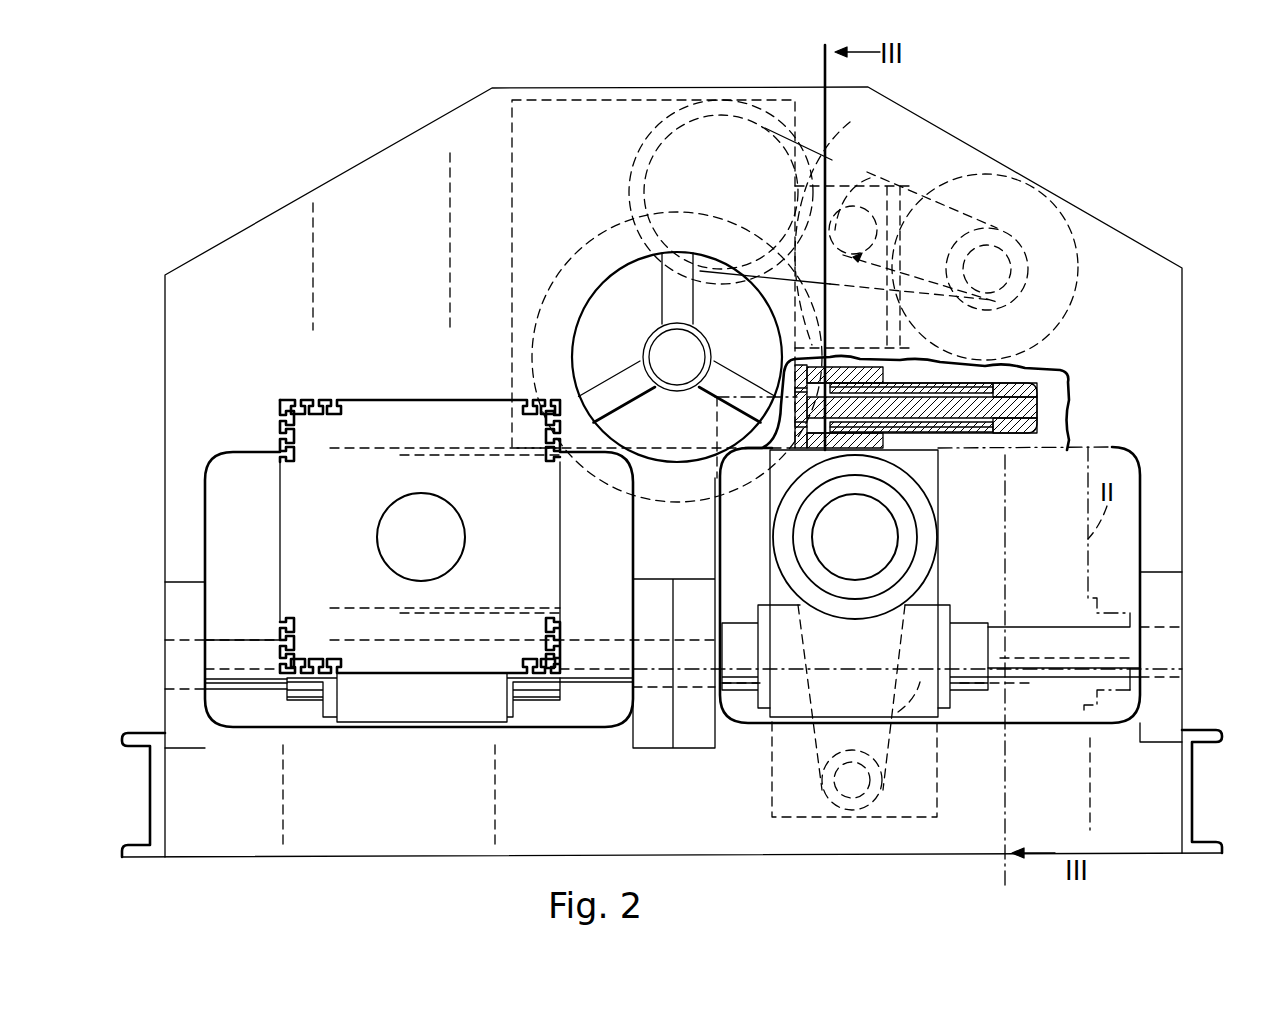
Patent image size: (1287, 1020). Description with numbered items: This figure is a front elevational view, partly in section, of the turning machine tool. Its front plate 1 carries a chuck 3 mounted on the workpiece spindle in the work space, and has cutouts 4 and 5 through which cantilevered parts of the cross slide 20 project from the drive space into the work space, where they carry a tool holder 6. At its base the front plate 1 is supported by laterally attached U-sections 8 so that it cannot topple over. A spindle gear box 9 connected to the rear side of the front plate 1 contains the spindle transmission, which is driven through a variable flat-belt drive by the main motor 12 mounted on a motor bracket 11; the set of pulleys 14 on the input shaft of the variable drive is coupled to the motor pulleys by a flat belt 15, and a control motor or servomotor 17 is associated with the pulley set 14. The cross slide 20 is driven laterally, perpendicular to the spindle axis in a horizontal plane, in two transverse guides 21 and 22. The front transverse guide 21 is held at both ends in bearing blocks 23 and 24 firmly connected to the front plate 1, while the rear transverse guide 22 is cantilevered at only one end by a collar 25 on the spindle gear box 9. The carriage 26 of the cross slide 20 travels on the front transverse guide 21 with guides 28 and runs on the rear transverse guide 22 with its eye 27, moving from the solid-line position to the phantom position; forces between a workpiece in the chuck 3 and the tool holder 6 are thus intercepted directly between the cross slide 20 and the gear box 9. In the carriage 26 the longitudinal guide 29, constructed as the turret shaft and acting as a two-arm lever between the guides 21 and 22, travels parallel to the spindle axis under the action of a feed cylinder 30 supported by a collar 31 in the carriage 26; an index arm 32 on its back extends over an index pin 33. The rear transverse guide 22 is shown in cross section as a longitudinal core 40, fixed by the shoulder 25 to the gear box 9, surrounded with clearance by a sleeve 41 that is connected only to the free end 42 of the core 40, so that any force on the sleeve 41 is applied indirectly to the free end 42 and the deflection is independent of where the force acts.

The front plate 1 is at (1166, 286).
The chuck 3 is at (623, 291).
The cutout 4 is at (240, 464).
The cutout 5 is at (1140, 536).
The tool holder 6 is at (413, 422).
The U-section 8 is at (158, 793).
The spindle gear box 9 is at (597, 99).
The motor bracket 11 is at (862, 168).
The main motor 12 is at (1000, 176).
The set of pulleys 14 is at (770, 102).
The flat belt 15 is at (836, 218).
The control motor 17 is at (878, 181).
The cross slide 20 is at (768, 526).
The transverse guide 21 is at (1065, 650).
The transverse guide 22 is at (930, 404).
The bearing block 23 is at (1165, 597).
The bearing block 24 is at (718, 740).
The collar 25 is at (800, 385).
The carriage 26 is at (888, 583).
The eye 27 is at (868, 368).
The guide 28 is at (742, 690).
The longitudinal guide 29 is at (825, 540).
The feed cylinder 30 is at (900, 557).
The collar 31 is at (925, 518).
The index arm 32 is at (867, 697).
The index pin 33 is at (883, 760).
The longitudinal core 40 is at (975, 404).
The sleeve 41 is at (995, 425).
The free end 42 is at (1017, 408).